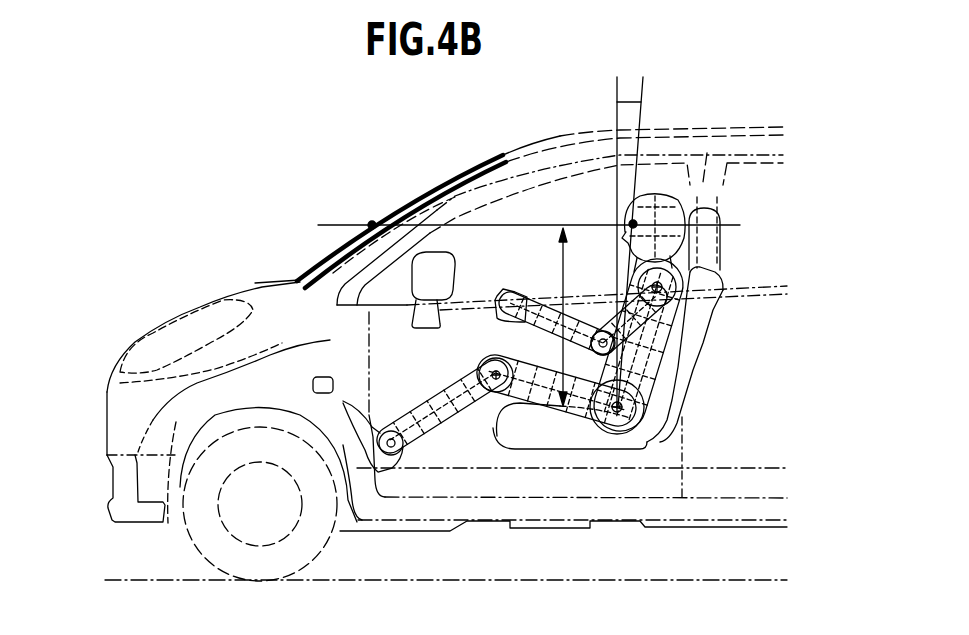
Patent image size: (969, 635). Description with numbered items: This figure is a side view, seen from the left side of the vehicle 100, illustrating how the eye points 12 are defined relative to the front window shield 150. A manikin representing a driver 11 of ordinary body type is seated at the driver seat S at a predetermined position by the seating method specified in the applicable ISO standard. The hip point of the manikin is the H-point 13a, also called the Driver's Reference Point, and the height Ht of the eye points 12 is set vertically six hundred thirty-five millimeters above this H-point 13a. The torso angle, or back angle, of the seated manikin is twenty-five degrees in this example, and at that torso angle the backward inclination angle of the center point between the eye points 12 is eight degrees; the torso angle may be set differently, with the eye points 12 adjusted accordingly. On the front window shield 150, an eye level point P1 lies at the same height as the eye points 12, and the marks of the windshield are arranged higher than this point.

The vehicle 100 is at (238, 292).
The front window shield 150 is at (333, 262).
The eye level point P1 is at (372, 224).
The height of the eye points Ht is at (561, 266).
The driver 11 is at (678, 196).
The eye points 12 is at (762, 239).
The driver seat S is at (702, 327).
The H-point 13a is at (650, 410).